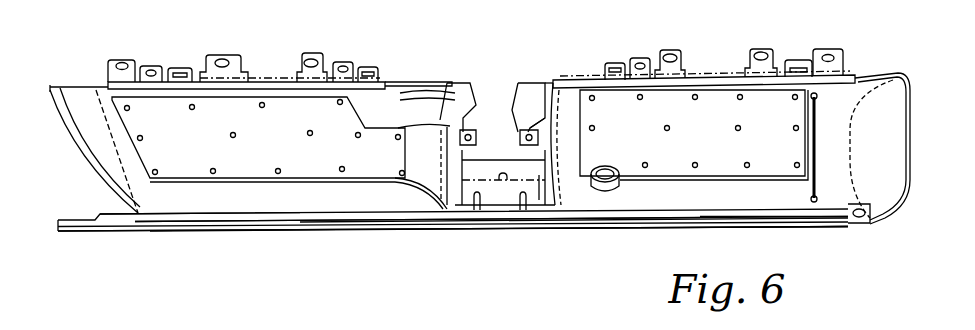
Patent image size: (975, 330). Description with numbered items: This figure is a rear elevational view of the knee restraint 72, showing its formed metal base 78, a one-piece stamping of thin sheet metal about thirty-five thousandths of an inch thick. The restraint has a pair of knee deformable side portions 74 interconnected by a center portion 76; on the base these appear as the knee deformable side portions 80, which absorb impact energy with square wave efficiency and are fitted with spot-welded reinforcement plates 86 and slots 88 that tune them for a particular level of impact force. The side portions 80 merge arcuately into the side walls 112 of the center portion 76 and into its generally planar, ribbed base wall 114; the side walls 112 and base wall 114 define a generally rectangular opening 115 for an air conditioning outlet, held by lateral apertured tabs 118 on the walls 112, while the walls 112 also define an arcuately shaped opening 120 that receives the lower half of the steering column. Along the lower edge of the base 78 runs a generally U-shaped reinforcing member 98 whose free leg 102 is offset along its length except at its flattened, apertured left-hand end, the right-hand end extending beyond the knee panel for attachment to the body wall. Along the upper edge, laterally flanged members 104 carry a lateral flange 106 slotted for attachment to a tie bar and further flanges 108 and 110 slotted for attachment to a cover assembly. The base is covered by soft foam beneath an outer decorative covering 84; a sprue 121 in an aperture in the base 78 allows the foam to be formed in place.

The knee restraint 72 is at (310, 236).
The knee deformable side portion 74 is at (272, 230).
The center portion 76 is at (435, 227).
The metal base 78 is at (182, 202).
The knee deformable side portion of the base 80 is at (227, 208).
The outer decorative covering 84 is at (563, 230).
The reinforcement plate 86 is at (303, 160).
The slot 88 is at (458, 96).
The U-shaped reinforcing member 98 is at (853, 223).
The free leg 102 is at (743, 220).
The laterally flanged member 104 is at (273, 85).
The lateral flange 106 is at (108, 62).
The flange 108 is at (153, 66).
The flange 110 is at (180, 68).
The side wall 112 is at (533, 108).
The base wall 114 is at (492, 203).
The rectangularly shaped opening 115 is at (507, 181).
The lateral apertured tab 118 is at (473, 133).
The arcuately shaped opening 120 is at (548, 108).
The sprue 121 is at (606, 168).